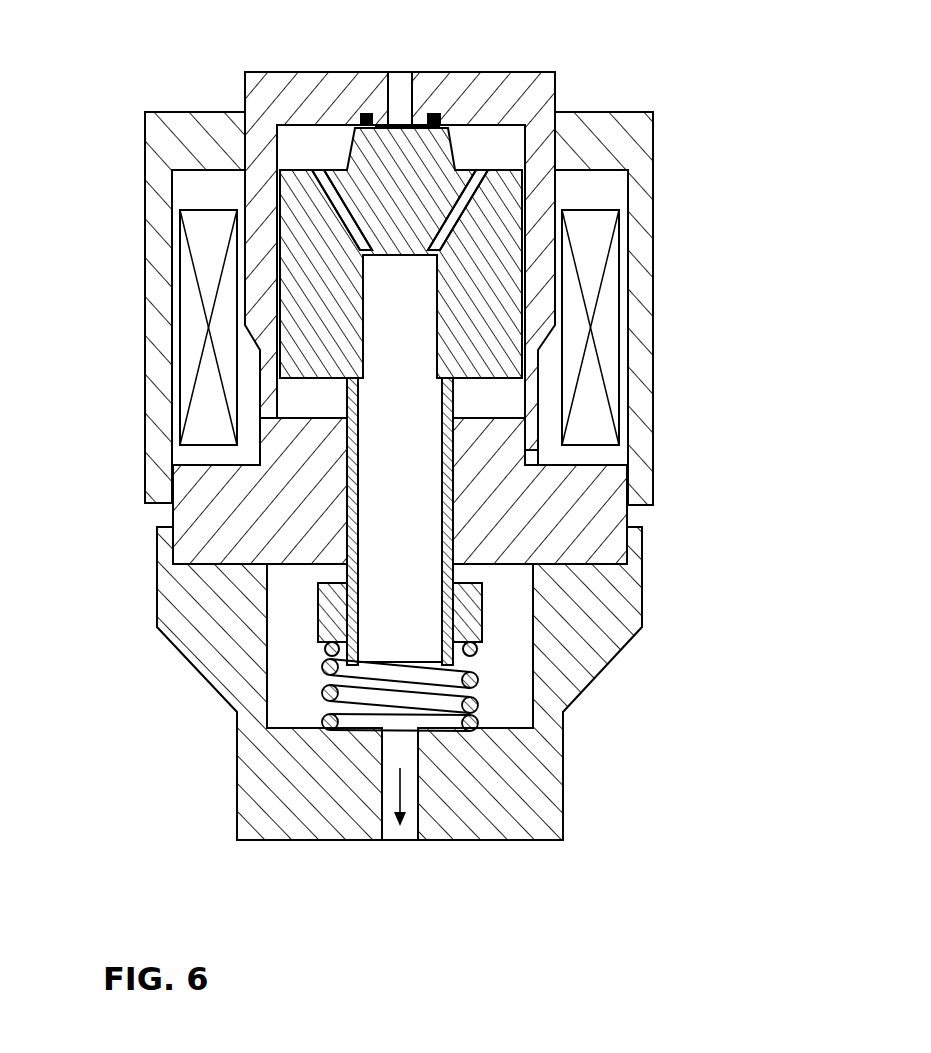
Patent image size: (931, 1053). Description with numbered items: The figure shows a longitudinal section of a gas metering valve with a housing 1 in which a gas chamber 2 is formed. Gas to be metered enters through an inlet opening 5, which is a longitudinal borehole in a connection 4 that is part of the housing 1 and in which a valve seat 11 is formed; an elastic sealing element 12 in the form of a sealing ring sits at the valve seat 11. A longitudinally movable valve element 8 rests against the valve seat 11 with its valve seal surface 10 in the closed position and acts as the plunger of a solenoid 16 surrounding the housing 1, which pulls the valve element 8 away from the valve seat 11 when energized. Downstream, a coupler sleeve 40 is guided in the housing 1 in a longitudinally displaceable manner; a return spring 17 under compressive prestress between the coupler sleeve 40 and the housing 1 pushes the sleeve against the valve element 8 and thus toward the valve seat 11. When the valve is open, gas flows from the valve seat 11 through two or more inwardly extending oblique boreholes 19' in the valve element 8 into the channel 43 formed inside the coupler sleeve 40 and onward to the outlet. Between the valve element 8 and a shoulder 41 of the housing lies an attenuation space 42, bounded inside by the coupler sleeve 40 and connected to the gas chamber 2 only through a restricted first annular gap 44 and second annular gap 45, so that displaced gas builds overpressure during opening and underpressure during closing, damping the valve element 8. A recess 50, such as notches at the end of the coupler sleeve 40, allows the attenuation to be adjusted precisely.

The housing 1 is at (678, 469).
The gas chamber 2 is at (510, 597).
The connection 4 is at (600, 512).
The inlet opening 5 is at (395, 100).
The valve element 8 is at (495, 270).
The valve seal surface 10 is at (418, 124).
The valve seat 11 is at (356, 128).
The elastic sealing element 12 is at (434, 120).
The solenoid 16 is at (603, 330).
The return spring 17 is at (477, 652).
The oblique boreholes 19' is at (406, 210).
The coupler sleeve 40 is at (330, 600).
The shoulder 41 is at (323, 410).
The attenuation space 42 is at (300, 390).
The channel 43 is at (383, 527).
The first annular gap 44 is at (270, 275).
The second annular gap 45 is at (330, 480).
The recess 50 is at (457, 385).